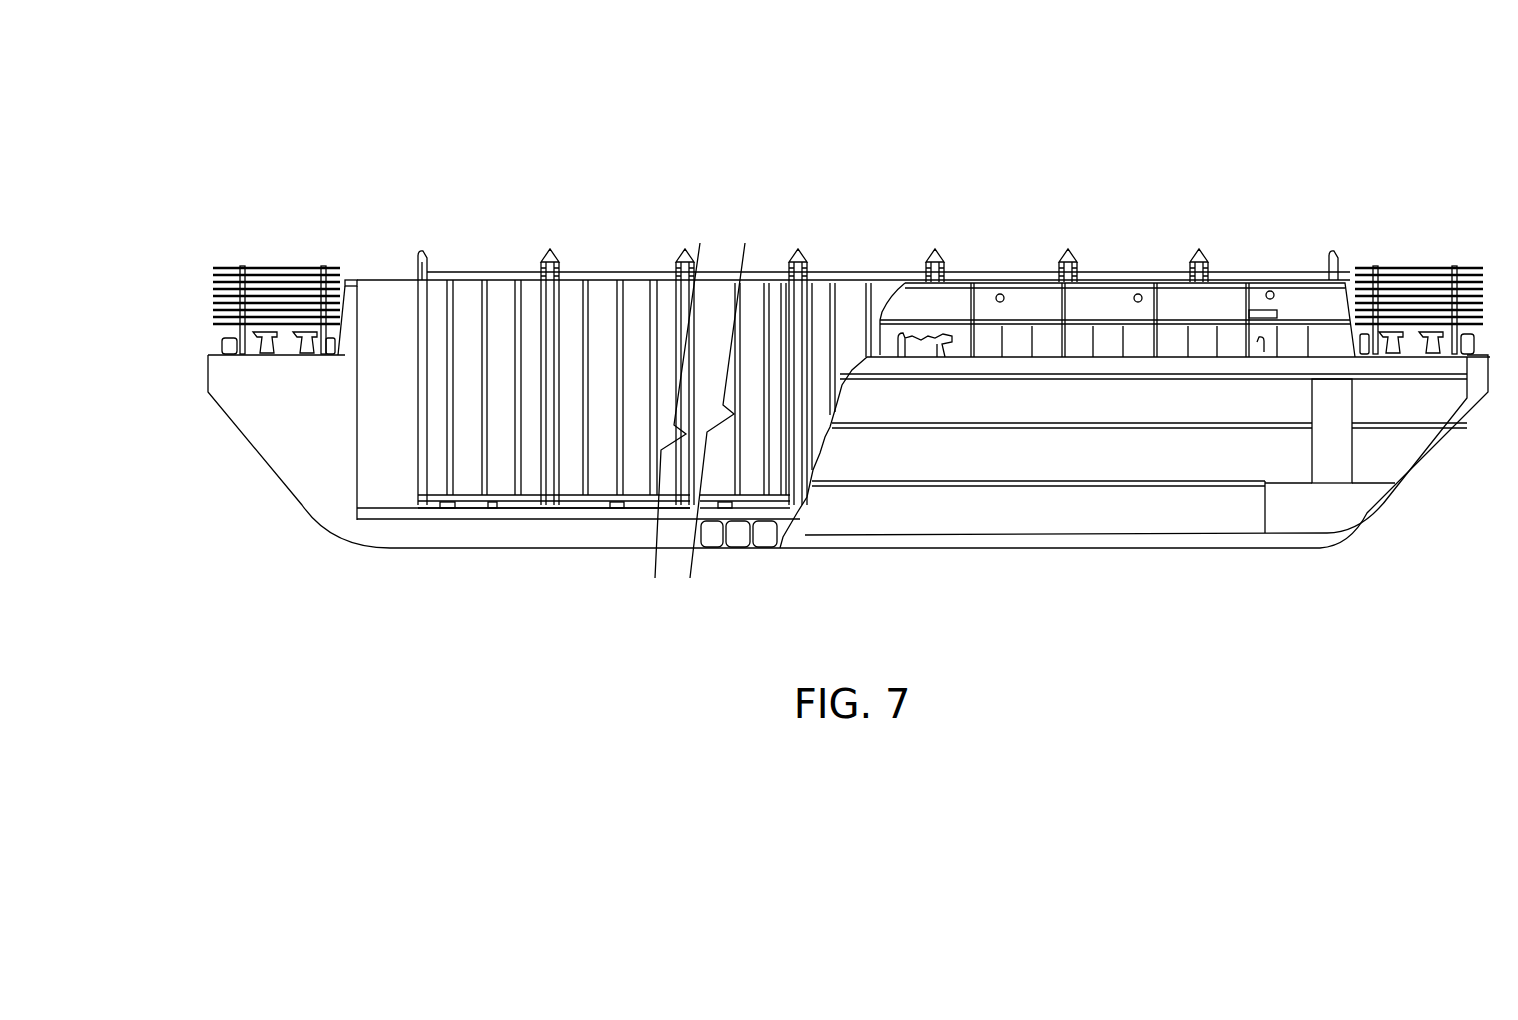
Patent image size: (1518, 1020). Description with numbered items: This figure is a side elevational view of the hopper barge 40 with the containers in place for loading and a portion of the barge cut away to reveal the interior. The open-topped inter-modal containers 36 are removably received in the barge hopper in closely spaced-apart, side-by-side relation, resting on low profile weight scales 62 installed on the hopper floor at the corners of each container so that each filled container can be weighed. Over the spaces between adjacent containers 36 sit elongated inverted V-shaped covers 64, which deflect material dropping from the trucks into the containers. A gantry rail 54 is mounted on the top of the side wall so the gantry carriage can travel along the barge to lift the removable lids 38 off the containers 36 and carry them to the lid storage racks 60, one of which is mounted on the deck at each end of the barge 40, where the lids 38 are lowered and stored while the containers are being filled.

The hopper barge 40 is at (352, 153).
The inter-modal container 36 is at (592, 268).
The removable lid 38 is at (213, 294).
The rail 54 is at (1041, 288).
The lid storage rack 60 is at (240, 323).
The low profile weight scale 62 is at (522, 503).
The inverted V-shaped cover 64 is at (683, 256).